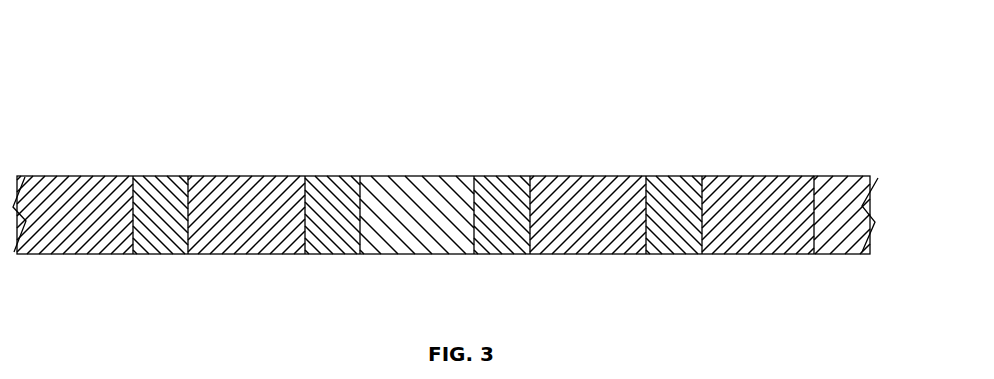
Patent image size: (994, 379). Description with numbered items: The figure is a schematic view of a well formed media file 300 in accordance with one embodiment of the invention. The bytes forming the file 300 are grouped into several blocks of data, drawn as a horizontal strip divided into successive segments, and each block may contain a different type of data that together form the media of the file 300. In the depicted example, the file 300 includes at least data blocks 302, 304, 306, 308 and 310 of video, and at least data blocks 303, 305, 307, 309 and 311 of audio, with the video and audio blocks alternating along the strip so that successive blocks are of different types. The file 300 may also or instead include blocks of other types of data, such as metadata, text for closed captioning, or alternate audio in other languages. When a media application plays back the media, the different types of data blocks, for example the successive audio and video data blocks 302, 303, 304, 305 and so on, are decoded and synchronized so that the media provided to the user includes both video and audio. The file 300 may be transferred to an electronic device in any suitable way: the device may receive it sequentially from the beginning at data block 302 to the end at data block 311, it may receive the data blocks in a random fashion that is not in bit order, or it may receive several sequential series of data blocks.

The file 300 is at (478, 42).
The data block 302 is at (82, 176).
The data block 303 is at (163, 254).
The data block 304 is at (248, 176).
The data block 305 is at (340, 254).
The data block 306 is at (447, 152).
The data block 307 is at (502, 254).
The data block 308 is at (590, 176).
The data block 309 is at (672, 254).
The data block 310 is at (760, 176).
The data block 311 is at (845, 254).